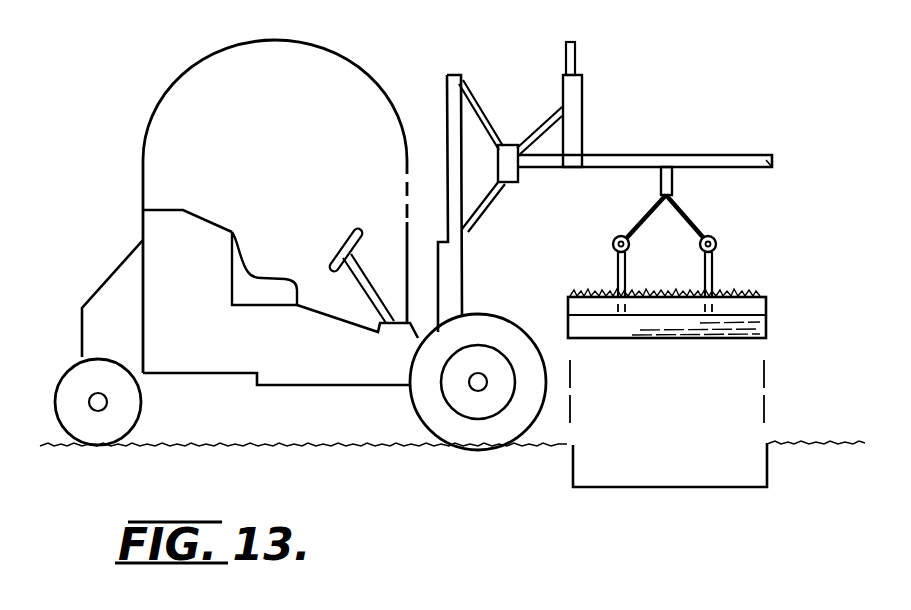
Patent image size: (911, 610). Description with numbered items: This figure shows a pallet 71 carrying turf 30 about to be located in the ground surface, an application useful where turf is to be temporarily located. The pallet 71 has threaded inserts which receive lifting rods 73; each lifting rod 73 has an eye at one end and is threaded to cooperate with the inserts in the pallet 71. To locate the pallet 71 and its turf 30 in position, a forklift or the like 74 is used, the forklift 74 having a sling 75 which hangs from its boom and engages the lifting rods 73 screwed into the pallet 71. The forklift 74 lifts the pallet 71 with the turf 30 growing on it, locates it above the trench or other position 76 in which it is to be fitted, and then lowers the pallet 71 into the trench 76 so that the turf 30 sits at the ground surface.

The forklift 74 is at (143, 98).
The sling 75 is at (670, 180).
The lifting rods 73 is at (627, 281).
The turf 30 is at (586, 282).
The pallet 71 is at (722, 350).
The trench 76 is at (630, 484).